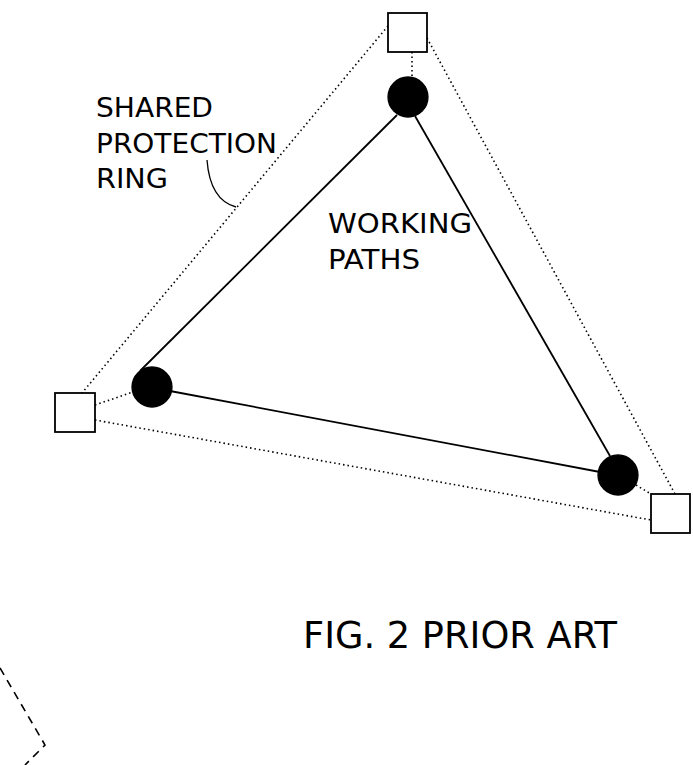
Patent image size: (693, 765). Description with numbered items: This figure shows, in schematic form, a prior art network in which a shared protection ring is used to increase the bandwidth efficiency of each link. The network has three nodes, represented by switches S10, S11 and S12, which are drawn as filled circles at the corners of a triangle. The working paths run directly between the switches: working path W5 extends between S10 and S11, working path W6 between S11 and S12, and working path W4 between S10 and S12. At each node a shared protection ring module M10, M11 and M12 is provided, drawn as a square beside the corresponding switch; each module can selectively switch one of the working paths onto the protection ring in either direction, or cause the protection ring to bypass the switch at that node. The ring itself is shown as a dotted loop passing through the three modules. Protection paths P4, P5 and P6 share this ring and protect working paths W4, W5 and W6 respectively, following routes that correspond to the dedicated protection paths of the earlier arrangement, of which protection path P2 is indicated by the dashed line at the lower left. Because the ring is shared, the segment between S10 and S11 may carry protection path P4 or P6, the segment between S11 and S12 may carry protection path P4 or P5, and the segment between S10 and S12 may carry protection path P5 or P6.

The shared protection ring module M10 is at (90, 426).
The shared protection ring module M11 is at (435, 43).
The shared protection ring module M12 is at (664, 524).
The switch S10 is at (187, 387).
The switch S11 is at (396, 119).
The switch S12 is at (580, 461).
The working path W4 is at (327, 418).
The working path W5 is at (237, 300).
The working path W6 is at (518, 305).
The protection path P4 is at (120, 338).
The protection path P5 is at (560, 259).
The protection path P6 is at (260, 457).
The protection path P2 is at (32, 708).